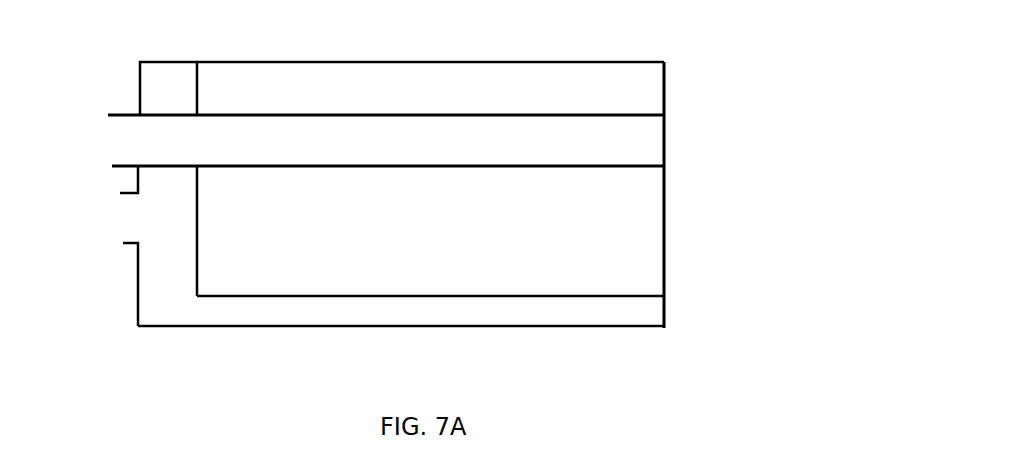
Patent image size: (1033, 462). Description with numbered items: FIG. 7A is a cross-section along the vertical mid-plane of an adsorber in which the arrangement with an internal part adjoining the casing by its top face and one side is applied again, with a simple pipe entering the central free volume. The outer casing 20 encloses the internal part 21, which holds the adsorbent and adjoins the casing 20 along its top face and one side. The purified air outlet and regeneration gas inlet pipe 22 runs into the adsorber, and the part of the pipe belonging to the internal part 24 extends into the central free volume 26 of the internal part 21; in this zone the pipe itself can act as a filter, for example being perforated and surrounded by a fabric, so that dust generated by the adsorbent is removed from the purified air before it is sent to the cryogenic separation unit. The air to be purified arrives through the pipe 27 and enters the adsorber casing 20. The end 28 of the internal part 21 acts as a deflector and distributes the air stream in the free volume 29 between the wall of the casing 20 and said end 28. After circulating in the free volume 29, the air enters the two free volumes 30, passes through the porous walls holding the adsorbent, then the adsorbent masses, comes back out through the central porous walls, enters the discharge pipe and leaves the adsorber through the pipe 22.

The casing 20 is at (172, 62).
The internal part 21 is at (619, 297).
The purified air outlet and regeneration gas inlet pipe 22 is at (118, 166).
The part of the pipe belonging to the internal part 24 is at (372, 115).
The free volume V1 26 is at (371, 235).
The pipe 27 is at (123, 243).
The end of the internal part 28 is at (196, 222).
The free volume 29 is at (165, 183).
The free volumes V4 and V5 30 is at (453, 315).